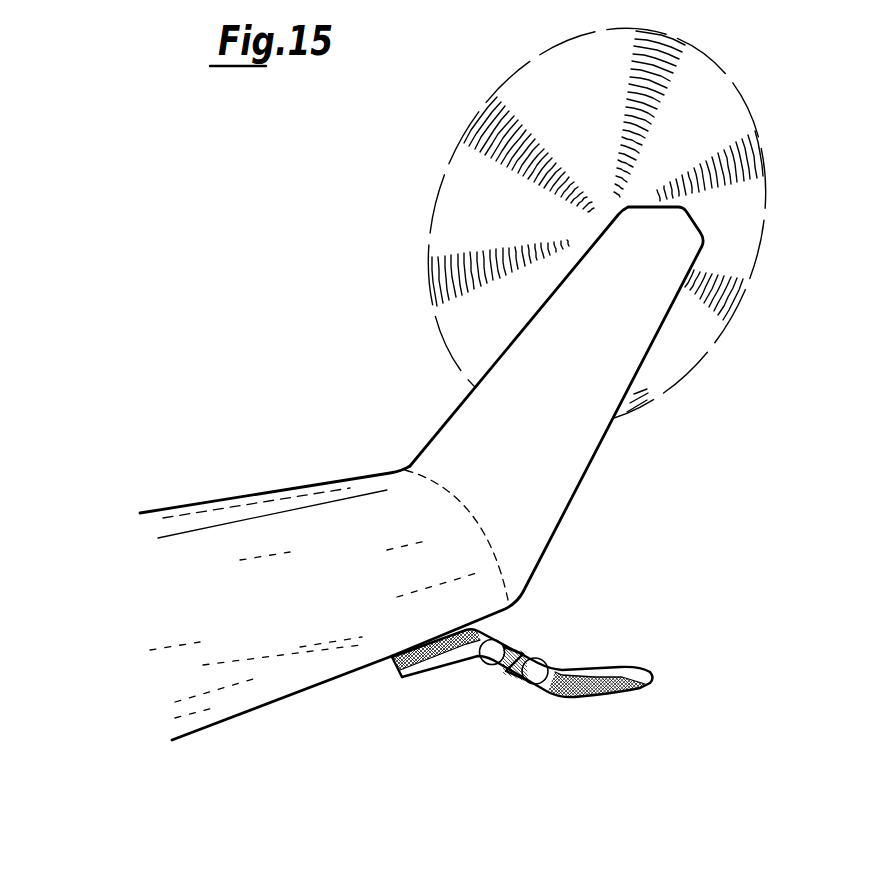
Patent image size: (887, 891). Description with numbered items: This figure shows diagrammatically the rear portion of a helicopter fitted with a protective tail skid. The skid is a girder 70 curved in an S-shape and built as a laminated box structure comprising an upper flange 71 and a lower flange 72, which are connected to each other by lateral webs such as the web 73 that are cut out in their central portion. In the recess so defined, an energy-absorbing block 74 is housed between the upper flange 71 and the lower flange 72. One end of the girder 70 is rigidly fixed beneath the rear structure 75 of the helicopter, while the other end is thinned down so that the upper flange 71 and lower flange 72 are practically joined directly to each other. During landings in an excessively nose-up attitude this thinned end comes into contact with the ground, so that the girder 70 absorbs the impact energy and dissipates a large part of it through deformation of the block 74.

The girder 70 is at (549, 667).
The upper flange 71 is at (641, 667).
The lower flange 72 is at (411, 677).
The lateral web 73 is at (567, 666).
The energy-absorbing block 74 is at (510, 675).
The rear structure 75 is at (267, 652).